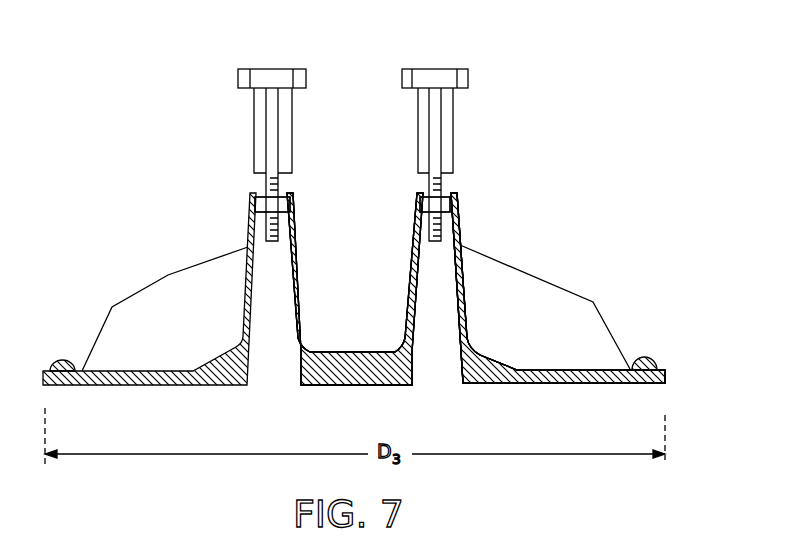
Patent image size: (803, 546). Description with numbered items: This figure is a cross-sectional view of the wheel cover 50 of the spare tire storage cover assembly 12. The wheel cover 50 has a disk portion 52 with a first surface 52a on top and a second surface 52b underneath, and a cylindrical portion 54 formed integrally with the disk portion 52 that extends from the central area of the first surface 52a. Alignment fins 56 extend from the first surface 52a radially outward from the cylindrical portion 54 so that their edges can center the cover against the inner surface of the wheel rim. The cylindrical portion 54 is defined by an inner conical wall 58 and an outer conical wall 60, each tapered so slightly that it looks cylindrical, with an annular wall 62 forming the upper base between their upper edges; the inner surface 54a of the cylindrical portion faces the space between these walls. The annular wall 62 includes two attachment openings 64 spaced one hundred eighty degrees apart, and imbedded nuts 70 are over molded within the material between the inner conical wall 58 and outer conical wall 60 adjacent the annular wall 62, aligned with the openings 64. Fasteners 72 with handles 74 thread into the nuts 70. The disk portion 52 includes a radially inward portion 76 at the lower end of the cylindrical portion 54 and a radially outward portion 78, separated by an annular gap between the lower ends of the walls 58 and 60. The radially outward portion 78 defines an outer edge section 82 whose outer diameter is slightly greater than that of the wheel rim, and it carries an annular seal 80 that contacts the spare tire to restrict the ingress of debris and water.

The spare tire storage cover assembly 12 is at (116, 129).
The wheel cover 50 is at (526, 258).
The disk portion 52 is at (605, 378).
The first surface 52a is at (572, 368).
The second surface 52b is at (535, 386).
The cylindrical portion 54 is at (466, 283).
The inner surface of post 54a is at (430, 303).
The alignment fins 56 is at (155, 320).
The inner conical wall 58 is at (409, 263).
The outer conical wall 60 is at (245, 296).
The annular wall 62 is at (283, 194).
The attachment openings 64 is at (268, 198).
The imbedded nuts 70 is at (420, 210).
The fasteners 72 is at (272, 128).
The handles 74 is at (271, 80).
The radially inward portion 76 is at (322, 386).
The radially outward portion 78 is at (649, 386).
The annular seal 80 is at (648, 360).
The outer edge section 82 is at (666, 377).